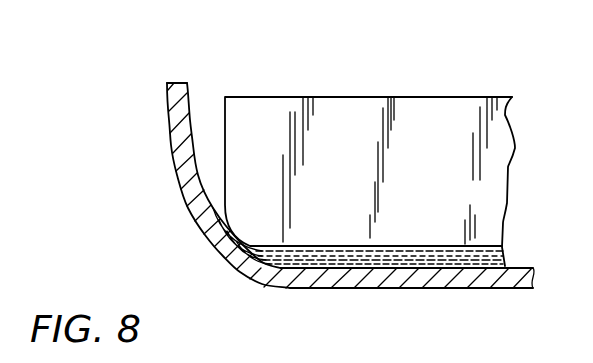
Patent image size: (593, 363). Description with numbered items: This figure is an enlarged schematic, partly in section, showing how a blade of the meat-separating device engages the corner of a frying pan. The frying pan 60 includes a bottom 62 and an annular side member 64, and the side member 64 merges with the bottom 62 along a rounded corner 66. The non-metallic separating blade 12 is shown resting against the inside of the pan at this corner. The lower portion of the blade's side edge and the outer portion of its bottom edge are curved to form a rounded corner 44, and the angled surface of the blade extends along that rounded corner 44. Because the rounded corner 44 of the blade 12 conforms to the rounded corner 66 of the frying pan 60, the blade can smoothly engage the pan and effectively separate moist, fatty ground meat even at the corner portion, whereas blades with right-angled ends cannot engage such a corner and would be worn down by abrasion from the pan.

The non-metallic separating blade 12 is at (413, 122).
The rounded corner 44 is at (253, 243).
The frying pan 60 is at (165, 117).
The bottom 62 is at (432, 277).
The annular side member 64 is at (176, 162).
The rounded corner 66 is at (236, 272).